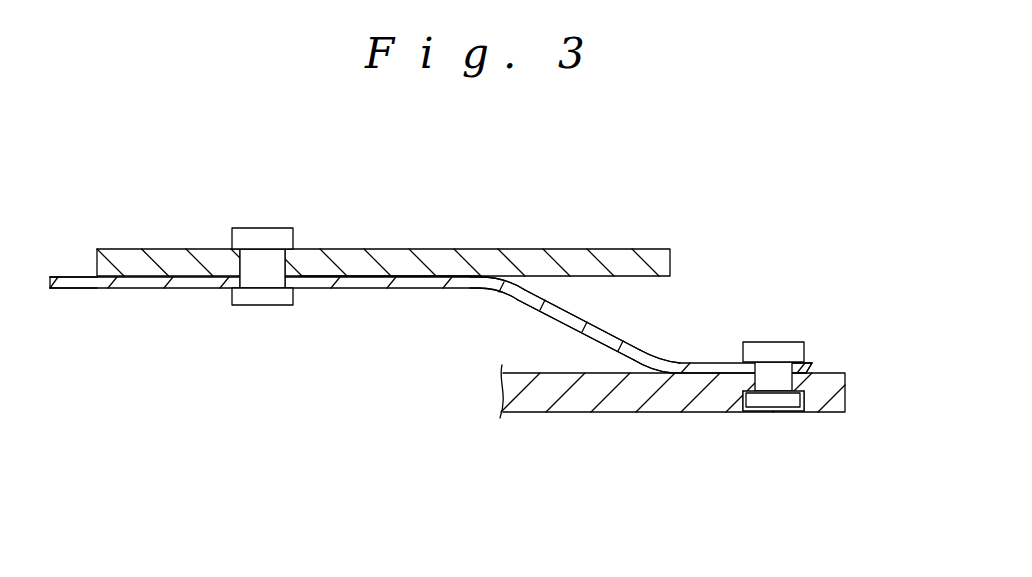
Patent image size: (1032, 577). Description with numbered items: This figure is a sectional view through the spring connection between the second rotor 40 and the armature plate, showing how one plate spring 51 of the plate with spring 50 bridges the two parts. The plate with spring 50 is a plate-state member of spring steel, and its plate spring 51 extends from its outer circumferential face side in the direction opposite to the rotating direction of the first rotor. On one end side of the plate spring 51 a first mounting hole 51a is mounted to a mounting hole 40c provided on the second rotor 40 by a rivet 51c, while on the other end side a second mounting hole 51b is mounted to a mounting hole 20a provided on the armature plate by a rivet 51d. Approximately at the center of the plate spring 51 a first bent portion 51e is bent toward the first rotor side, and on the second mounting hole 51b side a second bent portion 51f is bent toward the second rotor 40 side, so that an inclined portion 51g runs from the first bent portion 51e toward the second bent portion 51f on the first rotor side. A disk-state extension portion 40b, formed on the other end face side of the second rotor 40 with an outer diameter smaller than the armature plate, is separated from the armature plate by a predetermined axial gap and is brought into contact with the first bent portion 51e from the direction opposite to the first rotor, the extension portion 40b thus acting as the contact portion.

The second rotor 40 is at (433, 248).
The extension portion 40b is at (492, 265).
The mounting hole 40c is at (240, 254).
The plate with spring 50 is at (97, 288).
The plate spring 51 is at (372, 280).
The first mounting hole 51a is at (230, 290).
The second mounting hole 51b is at (793, 372).
The rivet 51c is at (250, 237).
The rivet 51d is at (775, 350).
The first bent portion 51e is at (497, 288).
The second bent portion 51f is at (662, 358).
The inclined portion 51g is at (597, 320).
The mounting hole 20a is at (752, 377).